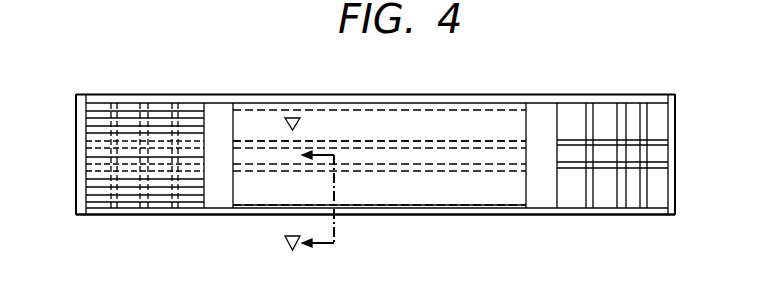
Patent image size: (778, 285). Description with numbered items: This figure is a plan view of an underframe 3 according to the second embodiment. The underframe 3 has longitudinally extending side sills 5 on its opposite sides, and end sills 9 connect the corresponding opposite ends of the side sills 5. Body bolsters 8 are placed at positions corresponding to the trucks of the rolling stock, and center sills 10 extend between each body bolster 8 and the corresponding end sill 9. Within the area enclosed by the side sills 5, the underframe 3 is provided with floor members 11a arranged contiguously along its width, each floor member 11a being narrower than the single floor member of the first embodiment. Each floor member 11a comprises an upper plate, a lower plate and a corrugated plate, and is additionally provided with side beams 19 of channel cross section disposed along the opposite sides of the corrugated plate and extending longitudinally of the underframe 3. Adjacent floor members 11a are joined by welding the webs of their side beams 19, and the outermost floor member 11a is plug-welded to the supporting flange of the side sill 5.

The underframe 3 is at (272, 123).
The side sill 5 is at (415, 95).
The body bolster 8 is at (220, 192).
The end sill 9 is at (76, 160).
The center sill 10 is at (134, 203).
The side beam 19 is at (497, 142).
The floor member 11a is at (252, 192).